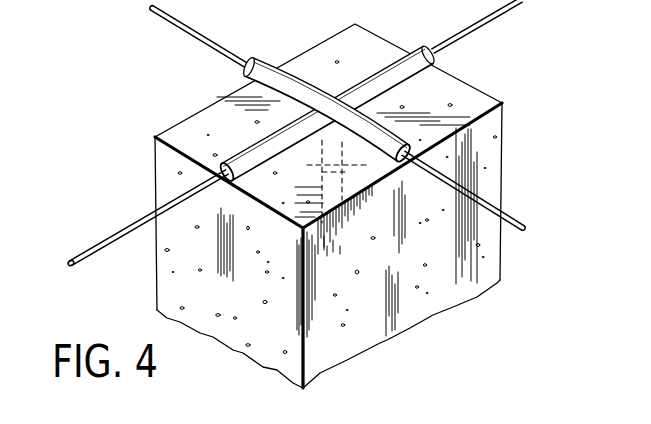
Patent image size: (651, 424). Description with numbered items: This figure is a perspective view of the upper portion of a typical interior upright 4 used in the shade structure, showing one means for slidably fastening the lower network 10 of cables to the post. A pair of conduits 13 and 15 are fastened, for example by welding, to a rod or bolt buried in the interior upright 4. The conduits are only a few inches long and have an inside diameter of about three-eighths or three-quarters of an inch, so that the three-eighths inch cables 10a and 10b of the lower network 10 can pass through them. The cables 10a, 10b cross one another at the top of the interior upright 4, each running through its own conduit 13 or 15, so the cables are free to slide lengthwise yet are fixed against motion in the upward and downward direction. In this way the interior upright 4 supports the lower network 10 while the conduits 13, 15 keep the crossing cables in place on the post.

The interior upright 4 is at (436, 299).
The lower network 10 is at (191, 36).
The cable 10a is at (82, 253).
The cable 10b is at (518, 215).
The conduit 13 is at (274, 72).
The conduit 15 is at (254, 155).